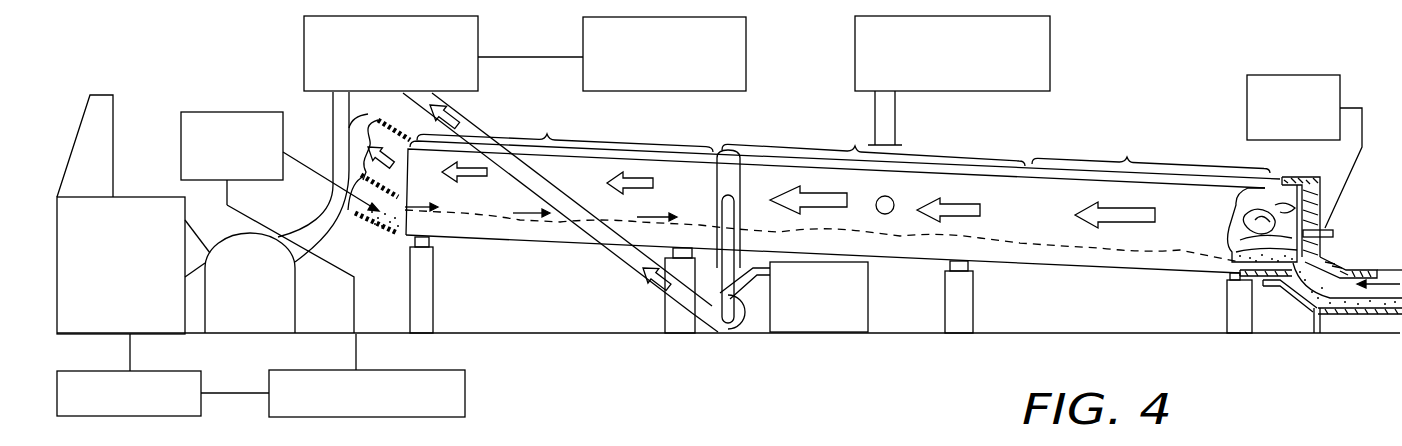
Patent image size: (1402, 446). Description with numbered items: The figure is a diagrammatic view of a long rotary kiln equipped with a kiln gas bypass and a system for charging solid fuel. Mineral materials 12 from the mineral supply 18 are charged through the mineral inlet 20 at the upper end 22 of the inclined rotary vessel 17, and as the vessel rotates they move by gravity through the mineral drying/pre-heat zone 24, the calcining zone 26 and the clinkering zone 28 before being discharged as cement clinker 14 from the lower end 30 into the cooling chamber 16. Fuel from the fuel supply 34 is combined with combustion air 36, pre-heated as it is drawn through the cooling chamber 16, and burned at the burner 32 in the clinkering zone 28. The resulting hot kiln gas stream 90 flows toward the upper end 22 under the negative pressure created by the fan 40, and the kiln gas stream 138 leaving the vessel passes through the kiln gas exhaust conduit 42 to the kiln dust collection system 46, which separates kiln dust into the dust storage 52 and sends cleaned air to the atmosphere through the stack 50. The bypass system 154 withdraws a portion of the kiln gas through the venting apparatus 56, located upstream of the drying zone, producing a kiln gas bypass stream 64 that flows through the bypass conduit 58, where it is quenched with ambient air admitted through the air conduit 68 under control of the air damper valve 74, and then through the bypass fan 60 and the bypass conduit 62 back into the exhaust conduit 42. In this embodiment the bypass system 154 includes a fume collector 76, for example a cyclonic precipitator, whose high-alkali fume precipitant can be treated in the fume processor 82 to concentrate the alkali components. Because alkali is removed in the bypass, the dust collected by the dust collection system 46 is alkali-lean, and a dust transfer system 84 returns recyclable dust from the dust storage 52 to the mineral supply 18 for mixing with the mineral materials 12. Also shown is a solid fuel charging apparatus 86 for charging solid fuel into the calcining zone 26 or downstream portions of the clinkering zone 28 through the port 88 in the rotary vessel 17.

The mineral materials 12 is at (393, 236).
The cement clinker 14 is at (1352, 303).
The cooling chamber 16 is at (1353, 257).
The rotary vessel 17 is at (1032, 280).
The mineral supply 18 is at (180, 150).
The mineral inlet 20 is at (313, 172).
The upper end 22 is at (450, 256).
The mineral drying/pre-heat zone 24 is at (845, 143).
The calcining zone 26 is at (873, 144).
The clinkering zone 28 is at (1151, 153).
The lower end 30 is at (1205, 294).
The burner 32 is at (1322, 233).
The fuel supply 34 is at (1246, 112).
The combustion air 36 is at (1318, 282).
The fan 40 is at (295, 300).
The kiln gas exhaust conduit 42 is at (360, 113).
The kiln dust collection system 46 is at (128, 220).
The stack 50 is at (100, 145).
The dust storage 52 is at (208, 357).
The venting apparatus 56 is at (754, 182).
The bypass conduit 58 is at (723, 220).
The bypass fan 60 is at (732, 328).
The bypass conduit 62 is at (590, 227).
The kiln gas bypass stream 64 is at (653, 285).
The air conduit 68 is at (752, 300).
The air damper valve 74 is at (870, 310).
The fume collector 76 is at (480, 33).
The fume processor 82 is at (747, 44).
The dust transfer system 84 is at (466, 398).
The solid fuel charging apparatus 86 is at (1050, 58).
The port 88 is at (893, 199).
The hot kiln gas stream 90 is at (980, 200).
The kiln gas stream 138 is at (636, 180).
The bypass system 154 is at (645, 310).